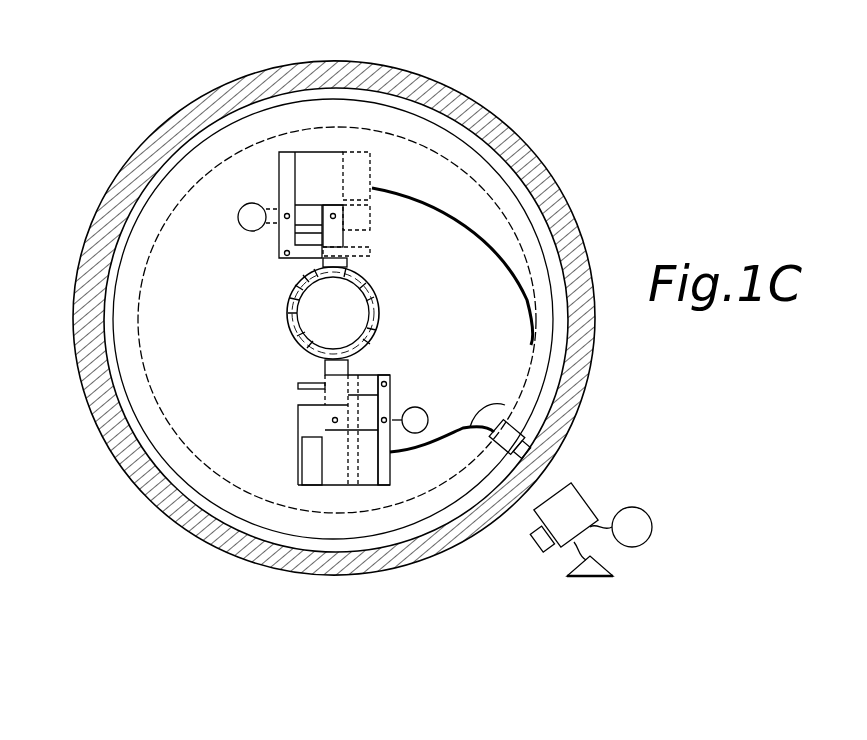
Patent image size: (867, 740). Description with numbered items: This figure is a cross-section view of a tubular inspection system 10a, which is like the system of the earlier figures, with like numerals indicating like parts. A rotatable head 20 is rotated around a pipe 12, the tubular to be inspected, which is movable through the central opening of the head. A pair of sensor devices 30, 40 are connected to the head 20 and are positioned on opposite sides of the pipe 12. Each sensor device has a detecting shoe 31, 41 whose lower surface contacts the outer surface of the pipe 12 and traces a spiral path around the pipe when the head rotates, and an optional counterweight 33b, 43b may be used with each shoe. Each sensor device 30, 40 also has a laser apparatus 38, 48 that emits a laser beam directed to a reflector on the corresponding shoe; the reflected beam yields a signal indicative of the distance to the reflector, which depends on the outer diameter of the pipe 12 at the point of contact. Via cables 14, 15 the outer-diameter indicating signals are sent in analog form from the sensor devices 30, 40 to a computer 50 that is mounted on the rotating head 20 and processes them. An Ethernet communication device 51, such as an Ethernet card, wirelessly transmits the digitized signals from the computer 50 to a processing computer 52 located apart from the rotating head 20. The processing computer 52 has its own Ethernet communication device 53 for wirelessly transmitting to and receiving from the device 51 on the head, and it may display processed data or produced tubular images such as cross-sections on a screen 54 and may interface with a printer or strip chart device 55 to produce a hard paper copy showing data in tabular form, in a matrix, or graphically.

The system 10a is at (596, 221).
The rotatable head 20 is at (148, 158).
The cable 14 is at (480, 213).
The pipe 12 is at (381, 313).
The sensor device 30 is at (353, 151).
The laser apparatus 38 is at (374, 170).
The detecting shoe 31 is at (350, 263).
The counterweight 33b is at (242, 216).
The cable 15 is at (530, 405).
The sensor device 40 is at (313, 487).
The detecting shoe 41 is at (322, 378).
The laser apparatus 48 is at (300, 467).
The counterweight 43b is at (429, 418).
The computer 50 is at (540, 448).
The Ethernet communication device 51 is at (492, 456).
The processing computer 52 is at (572, 505).
The Ethernet communication device 53 is at (540, 548).
The screen 54 is at (640, 527).
The printer or strip chart device 55 is at (598, 566).